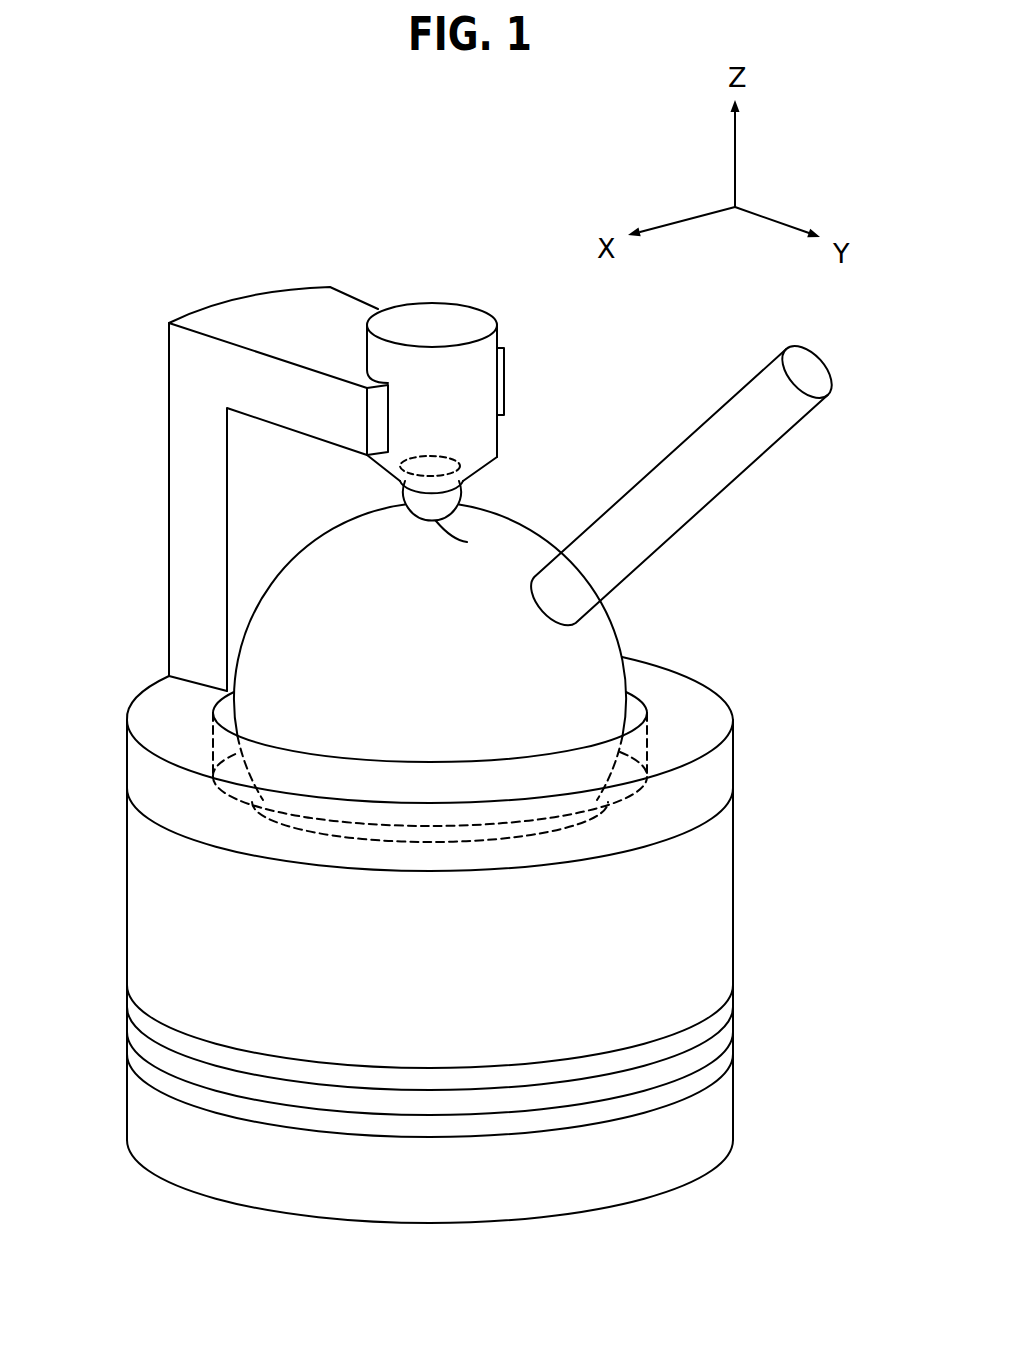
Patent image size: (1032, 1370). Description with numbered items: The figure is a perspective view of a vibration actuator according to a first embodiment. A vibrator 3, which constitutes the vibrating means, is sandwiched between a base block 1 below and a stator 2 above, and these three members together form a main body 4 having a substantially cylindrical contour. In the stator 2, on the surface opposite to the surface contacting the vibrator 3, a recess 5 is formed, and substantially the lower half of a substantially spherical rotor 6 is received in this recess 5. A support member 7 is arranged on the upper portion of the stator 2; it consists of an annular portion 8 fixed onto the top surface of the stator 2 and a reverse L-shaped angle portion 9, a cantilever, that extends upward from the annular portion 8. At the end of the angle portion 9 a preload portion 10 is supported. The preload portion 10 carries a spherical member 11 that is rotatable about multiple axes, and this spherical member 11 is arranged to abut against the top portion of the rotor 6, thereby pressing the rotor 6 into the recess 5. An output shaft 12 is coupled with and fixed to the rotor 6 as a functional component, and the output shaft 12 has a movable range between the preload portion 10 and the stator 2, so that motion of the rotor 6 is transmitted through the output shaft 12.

The base block 1 is at (732, 1113).
The stator 2 is at (733, 915).
The vibrator 3 is at (732, 1023).
The main body 4 is at (456, 940).
The recess 5 is at (307, 817).
The rotor 6 is at (610, 620).
The support member 7 is at (319, 452).
The annular portion 8 is at (733, 760).
The angle portion 9 is at (169, 497).
The preload portion 10 is at (447, 303).
The spherical member 11 is at (467, 542).
The output shaft 12 is at (749, 468).